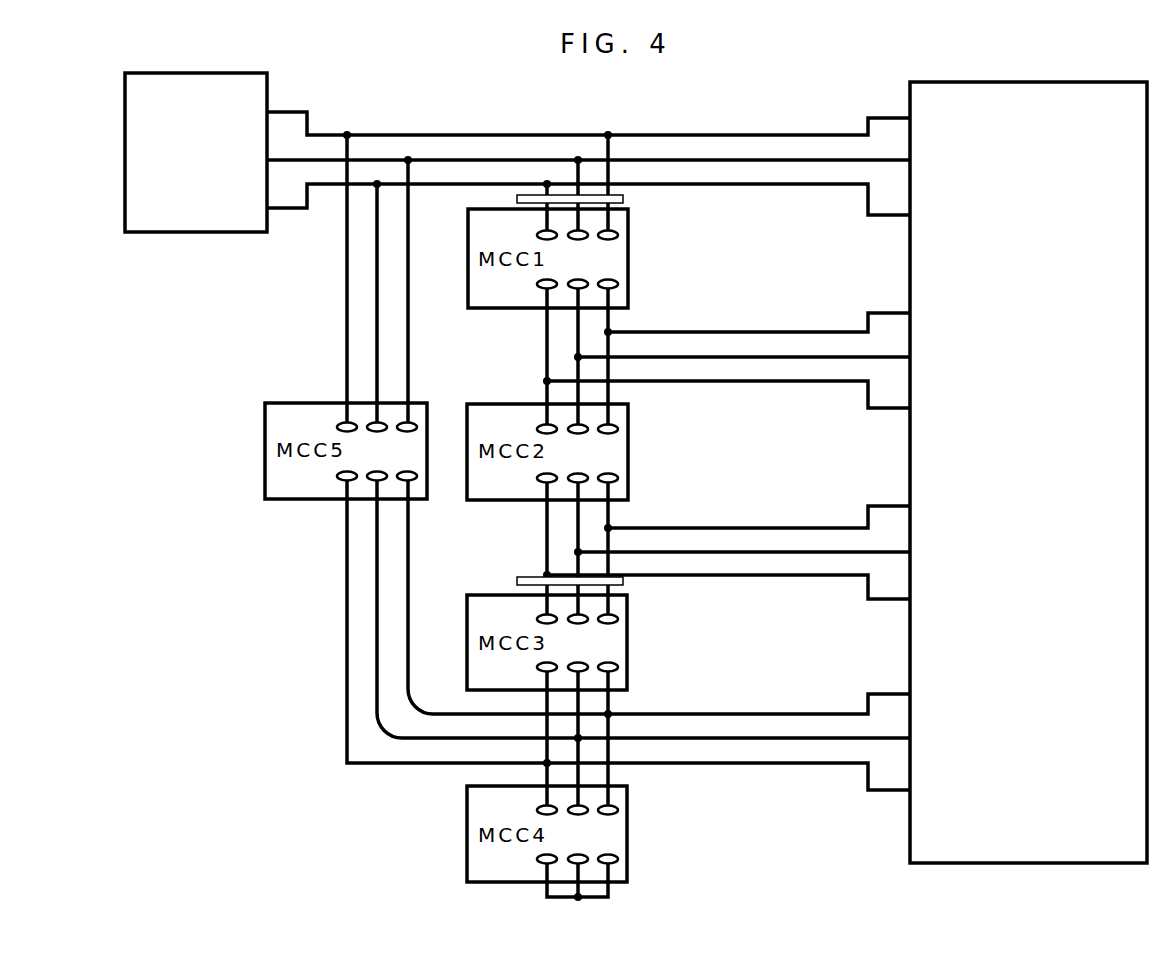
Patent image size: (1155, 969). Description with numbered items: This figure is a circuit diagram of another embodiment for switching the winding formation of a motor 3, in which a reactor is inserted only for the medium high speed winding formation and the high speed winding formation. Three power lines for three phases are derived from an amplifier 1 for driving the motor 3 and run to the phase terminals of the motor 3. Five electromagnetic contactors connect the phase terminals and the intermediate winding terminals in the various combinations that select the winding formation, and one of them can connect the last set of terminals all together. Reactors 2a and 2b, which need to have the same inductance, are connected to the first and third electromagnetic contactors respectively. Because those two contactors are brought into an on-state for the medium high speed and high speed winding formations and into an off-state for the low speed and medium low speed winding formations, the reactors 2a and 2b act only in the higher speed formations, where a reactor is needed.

The amplifier 1 is at (210, 232).
The reactor 2a is at (623, 199).
The reactor 2b is at (623, 581).
The motor 3 is at (910, 87).